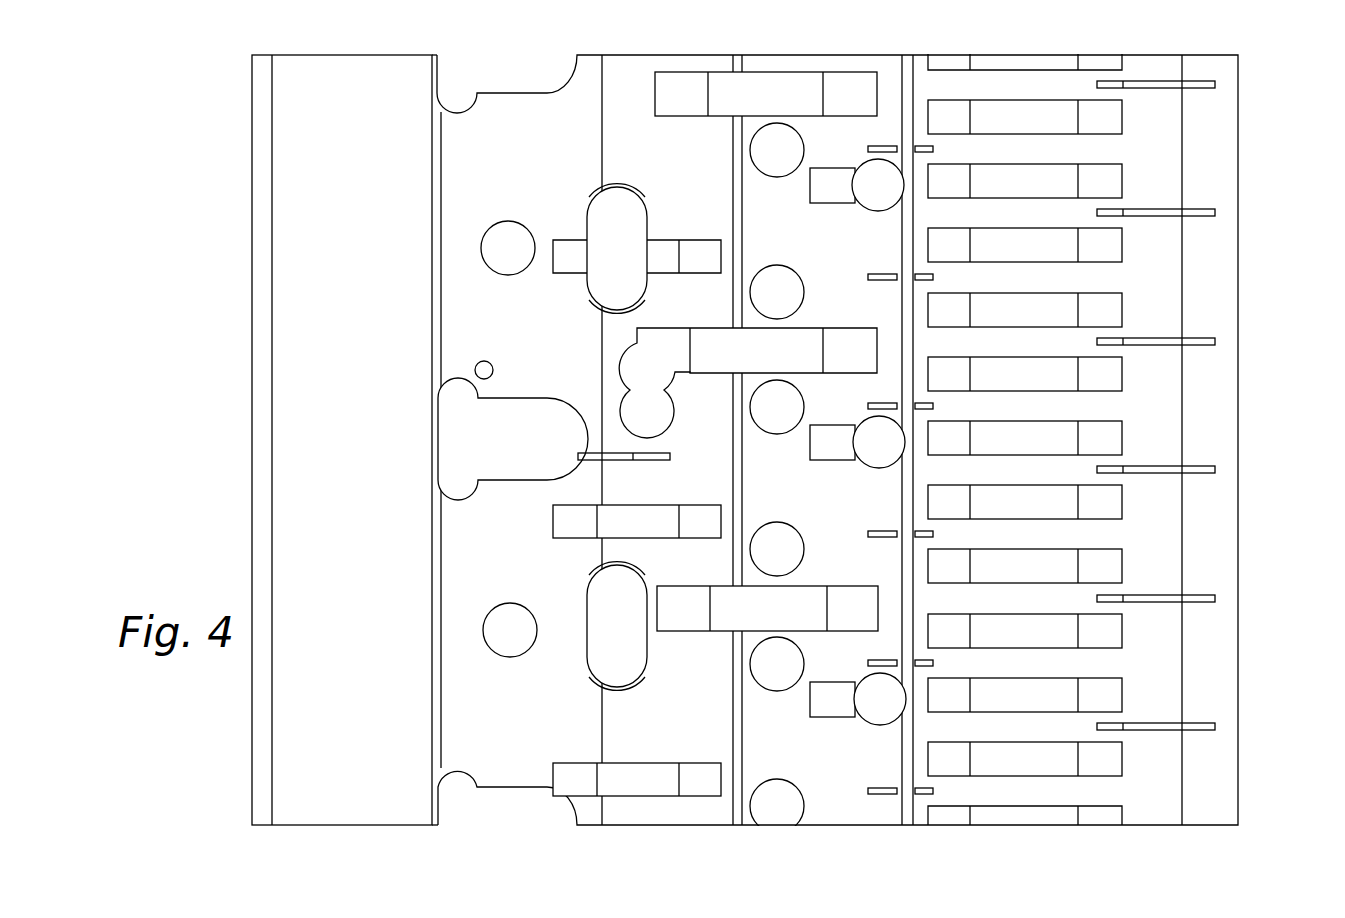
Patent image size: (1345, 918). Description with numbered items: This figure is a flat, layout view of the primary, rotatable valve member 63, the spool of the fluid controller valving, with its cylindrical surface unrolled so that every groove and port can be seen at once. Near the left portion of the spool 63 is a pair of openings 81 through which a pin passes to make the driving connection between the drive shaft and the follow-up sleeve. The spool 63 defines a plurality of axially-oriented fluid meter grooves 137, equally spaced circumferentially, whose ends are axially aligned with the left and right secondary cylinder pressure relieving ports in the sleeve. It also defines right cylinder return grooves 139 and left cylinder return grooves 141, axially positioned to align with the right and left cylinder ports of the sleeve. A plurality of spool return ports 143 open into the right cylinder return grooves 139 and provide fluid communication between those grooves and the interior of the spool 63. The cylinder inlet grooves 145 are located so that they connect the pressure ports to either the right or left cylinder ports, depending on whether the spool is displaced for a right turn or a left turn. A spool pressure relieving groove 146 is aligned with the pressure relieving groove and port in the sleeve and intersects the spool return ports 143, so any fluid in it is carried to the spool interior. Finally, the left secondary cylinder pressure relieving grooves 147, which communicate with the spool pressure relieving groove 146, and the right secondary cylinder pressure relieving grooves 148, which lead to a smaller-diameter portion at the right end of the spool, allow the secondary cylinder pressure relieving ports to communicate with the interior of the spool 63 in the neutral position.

The primary, rotatable valve member 63 is at (231, 157).
The openings 81 is at (592, 218).
The fluid meter grooves 137 is at (1122, 117).
The right cylinder return grooves 139 is at (824, 204).
The left cylinder return grooves 141 is at (695, 243).
The spool return ports 143 is at (878, 211).
The cylinder inlet grooves 145 is at (678, 118).
The spool pressure relieving groove 146 is at (908, 62).
The left secondary cylinder pressure relieving grooves 147 is at (935, 149).
The right secondary cylinder pressure relieving grooves 148 is at (1215, 84).